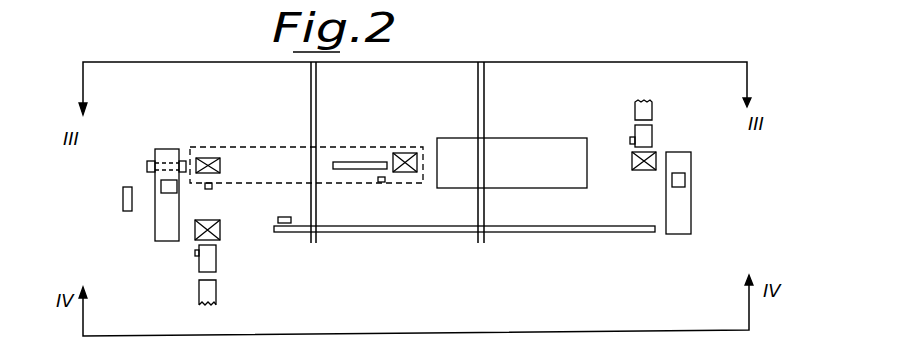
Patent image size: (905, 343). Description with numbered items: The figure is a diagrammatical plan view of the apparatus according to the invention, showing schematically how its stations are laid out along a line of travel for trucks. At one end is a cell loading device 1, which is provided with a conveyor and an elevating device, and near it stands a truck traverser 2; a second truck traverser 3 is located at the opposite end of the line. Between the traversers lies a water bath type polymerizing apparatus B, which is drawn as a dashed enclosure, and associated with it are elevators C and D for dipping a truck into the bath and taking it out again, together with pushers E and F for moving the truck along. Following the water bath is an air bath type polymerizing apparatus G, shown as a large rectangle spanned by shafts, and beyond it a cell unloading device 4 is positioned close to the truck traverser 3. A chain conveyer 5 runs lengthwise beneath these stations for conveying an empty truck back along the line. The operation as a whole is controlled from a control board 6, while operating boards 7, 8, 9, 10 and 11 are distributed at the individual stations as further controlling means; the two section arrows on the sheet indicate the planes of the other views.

The cell loading device 1 is at (216, 260).
The truck traverser 2 is at (173, 192).
The truck traverser 3 is at (680, 175).
The cell unloading device 4 is at (657, 155).
The chain conveyer 5 is at (497, 233).
The control board 6 is at (122, 212).
The operating board 7 is at (212, 189).
The operating board 8 is at (382, 182).
The operating board 9 is at (195, 255).
The operating board 10 is at (633, 140).
The operating board 11 is at (287, 223).
The water bath type polymerizing apparatus B is at (283, 155).
The elevator C is at (208, 158).
The elevator D is at (403, 153).
The pusher E is at (167, 165).
The pusher F is at (355, 165).
The air bath type polymerizing apparatus G is at (503, 138).